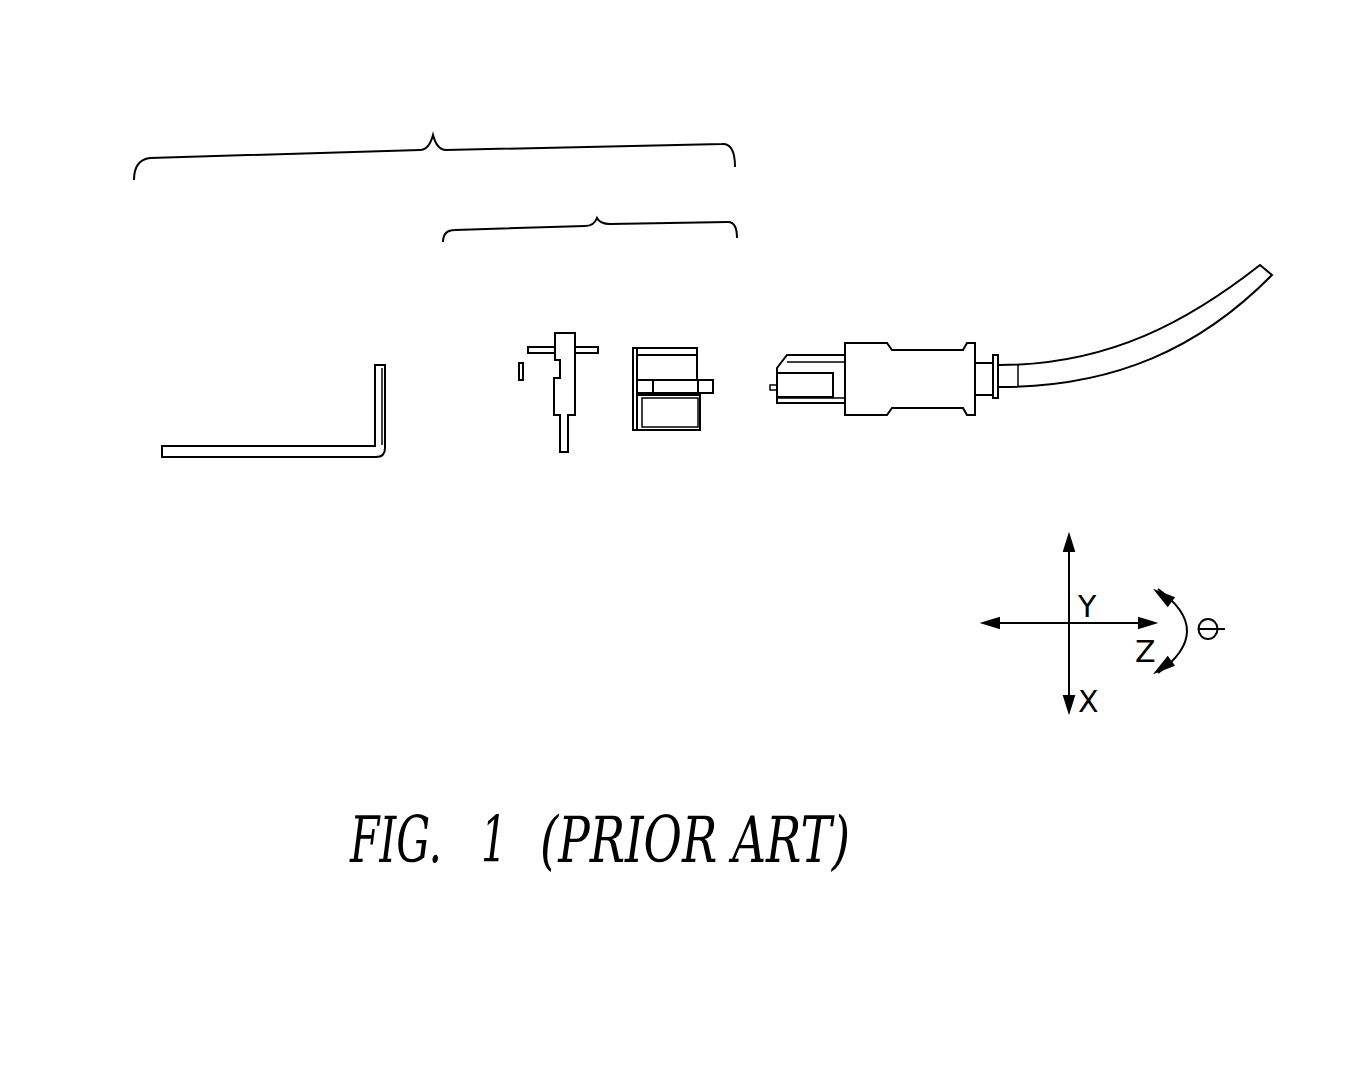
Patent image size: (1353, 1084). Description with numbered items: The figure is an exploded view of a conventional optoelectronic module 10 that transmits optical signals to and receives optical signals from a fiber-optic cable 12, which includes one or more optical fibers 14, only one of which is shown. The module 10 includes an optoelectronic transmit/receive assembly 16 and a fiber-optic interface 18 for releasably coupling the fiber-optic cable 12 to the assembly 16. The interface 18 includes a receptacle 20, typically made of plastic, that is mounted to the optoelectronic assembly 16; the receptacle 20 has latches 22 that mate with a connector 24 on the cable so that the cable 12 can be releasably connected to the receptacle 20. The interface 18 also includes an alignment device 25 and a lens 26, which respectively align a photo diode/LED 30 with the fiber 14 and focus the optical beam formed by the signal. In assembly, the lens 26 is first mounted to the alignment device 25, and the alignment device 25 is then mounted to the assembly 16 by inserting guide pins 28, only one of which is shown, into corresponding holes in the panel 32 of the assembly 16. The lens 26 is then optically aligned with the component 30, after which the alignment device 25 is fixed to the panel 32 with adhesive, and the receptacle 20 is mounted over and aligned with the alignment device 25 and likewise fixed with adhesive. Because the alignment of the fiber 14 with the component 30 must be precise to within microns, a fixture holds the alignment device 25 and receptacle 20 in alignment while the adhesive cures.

The optoelectronic module 10 is at (434, 134).
The fiber-optic cable 12 is at (1163, 360).
The optical fiber 14 is at (775, 387).
The optoelectronic transmit/receive assembly 16 is at (313, 480).
The fiber-optic interface 18 is at (590, 207).
The receptacle 20 is at (648, 348).
The latches 22 is at (707, 380).
The connector 24 is at (929, 310).
The alignment device 25 is at (568, 432).
The lens 26 is at (515, 370).
The guide pins 28 is at (543, 347).
The photo diode/LED 30 is at (390, 380).
The panel 32 is at (388, 402).